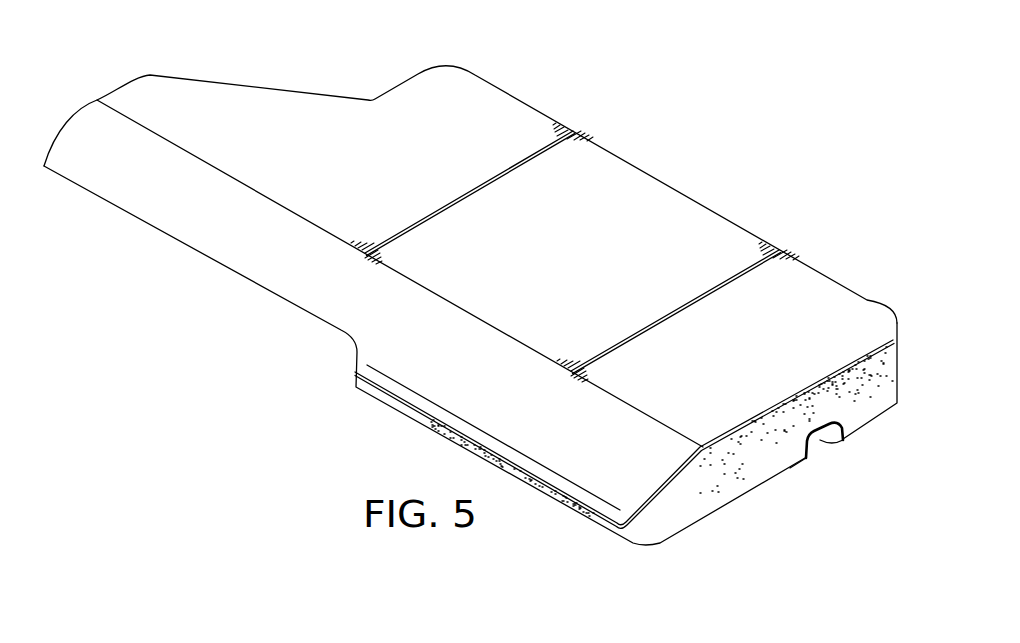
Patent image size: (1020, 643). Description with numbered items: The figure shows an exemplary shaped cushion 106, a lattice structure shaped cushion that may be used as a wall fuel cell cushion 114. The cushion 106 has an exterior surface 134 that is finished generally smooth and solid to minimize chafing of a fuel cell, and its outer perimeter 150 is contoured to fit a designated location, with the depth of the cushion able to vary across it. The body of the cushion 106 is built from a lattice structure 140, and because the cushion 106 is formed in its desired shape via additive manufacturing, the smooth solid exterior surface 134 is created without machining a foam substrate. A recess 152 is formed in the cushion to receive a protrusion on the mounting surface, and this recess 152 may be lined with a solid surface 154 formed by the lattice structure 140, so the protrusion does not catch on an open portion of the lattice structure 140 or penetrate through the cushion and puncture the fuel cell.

The shaped cushion 106 is at (502, 286).
The wall fuel cell cushion 114 is at (772, 102).
The exterior surface 134 is at (265, 100).
The outer perimeter 150 is at (208, 243).
The lattice structure 140 is at (878, 401).
The recess 152 is at (815, 464).
The solid surface 154 is at (823, 442).